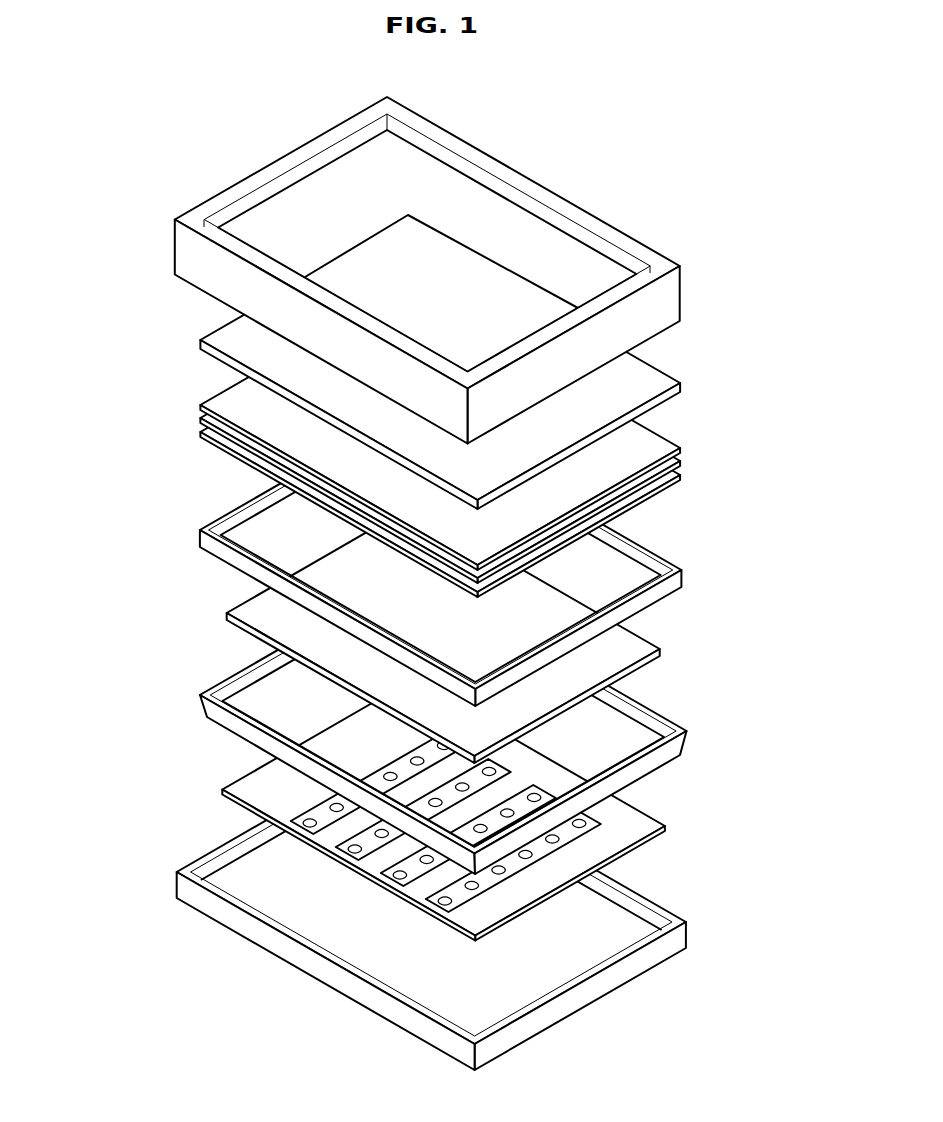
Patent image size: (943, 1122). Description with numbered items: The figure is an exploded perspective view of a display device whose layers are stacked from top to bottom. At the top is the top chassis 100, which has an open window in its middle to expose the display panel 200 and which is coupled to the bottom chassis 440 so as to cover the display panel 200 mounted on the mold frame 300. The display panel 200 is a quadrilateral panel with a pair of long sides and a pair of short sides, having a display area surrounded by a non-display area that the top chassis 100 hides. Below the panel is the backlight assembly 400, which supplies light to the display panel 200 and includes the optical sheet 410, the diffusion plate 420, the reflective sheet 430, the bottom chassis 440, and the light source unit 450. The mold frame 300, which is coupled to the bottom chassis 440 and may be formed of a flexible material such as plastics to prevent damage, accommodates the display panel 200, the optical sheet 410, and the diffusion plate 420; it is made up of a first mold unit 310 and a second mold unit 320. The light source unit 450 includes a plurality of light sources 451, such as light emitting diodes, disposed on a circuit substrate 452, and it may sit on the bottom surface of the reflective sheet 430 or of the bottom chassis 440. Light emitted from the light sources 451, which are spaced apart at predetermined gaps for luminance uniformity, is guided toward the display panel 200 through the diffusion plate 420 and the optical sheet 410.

The top chassis 100 is at (200, 249).
The display panel 200 is at (200, 342).
The mold frame 300 is at (785, 612).
The first mold unit 310 is at (665, 590).
The second mold unit 320 is at (648, 717).
The backlight assembly 400 is at (102, 905).
The optical sheet 410 is at (173, 395).
The diffusion plate 420 is at (242, 614).
The reflective sheet 430 is at (240, 797).
The bottom chassis 440 is at (186, 888).
The light source unit 450 is at (403, 895).
The light source 451 is at (441, 904).
The circuit substrate 452 is at (466, 889).